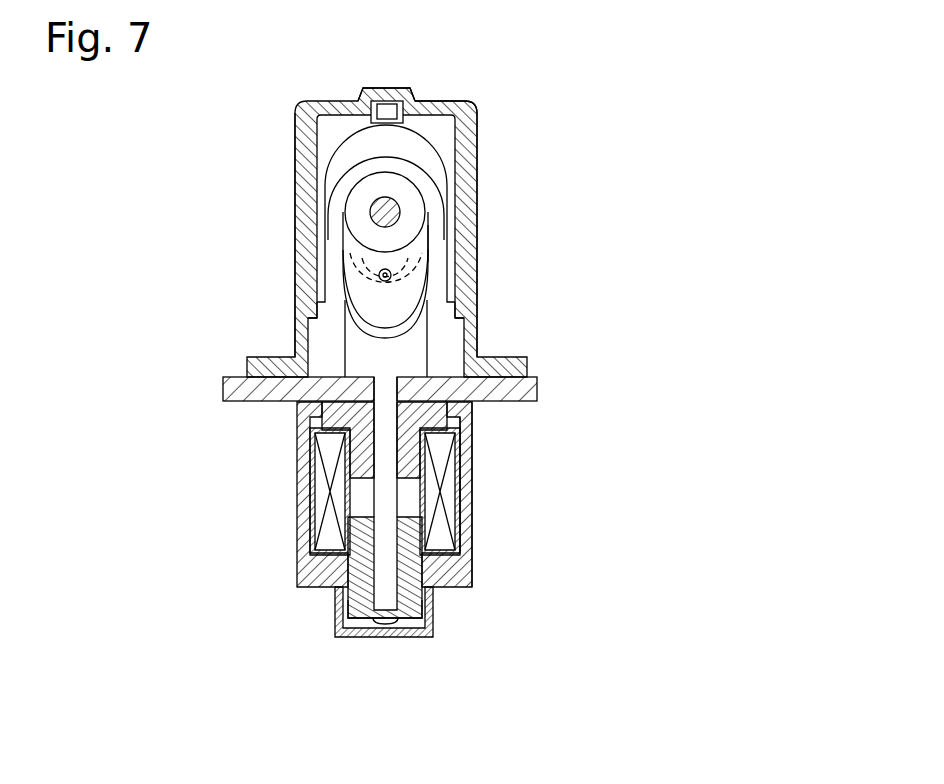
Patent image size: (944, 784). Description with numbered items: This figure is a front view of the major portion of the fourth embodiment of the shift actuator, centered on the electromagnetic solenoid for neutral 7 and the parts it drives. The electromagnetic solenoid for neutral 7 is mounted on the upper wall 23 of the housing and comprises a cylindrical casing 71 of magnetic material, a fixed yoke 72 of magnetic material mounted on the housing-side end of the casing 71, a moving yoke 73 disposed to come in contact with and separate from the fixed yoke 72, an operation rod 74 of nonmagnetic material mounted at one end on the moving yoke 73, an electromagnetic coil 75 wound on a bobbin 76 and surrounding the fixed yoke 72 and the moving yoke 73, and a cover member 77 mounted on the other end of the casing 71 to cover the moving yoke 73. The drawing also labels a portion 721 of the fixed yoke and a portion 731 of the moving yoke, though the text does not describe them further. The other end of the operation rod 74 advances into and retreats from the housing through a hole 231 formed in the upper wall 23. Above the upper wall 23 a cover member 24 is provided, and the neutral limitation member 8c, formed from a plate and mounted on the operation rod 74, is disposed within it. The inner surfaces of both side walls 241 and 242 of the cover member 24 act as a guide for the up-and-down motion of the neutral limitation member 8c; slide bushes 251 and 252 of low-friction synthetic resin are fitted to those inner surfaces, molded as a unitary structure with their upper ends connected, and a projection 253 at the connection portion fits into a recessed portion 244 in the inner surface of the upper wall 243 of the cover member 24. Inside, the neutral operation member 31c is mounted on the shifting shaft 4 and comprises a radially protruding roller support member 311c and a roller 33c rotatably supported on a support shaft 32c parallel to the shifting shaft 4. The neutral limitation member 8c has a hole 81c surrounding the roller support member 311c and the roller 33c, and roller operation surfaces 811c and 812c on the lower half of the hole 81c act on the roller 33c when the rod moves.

The electromagnetic solenoid for neutral 7 is at (535, 599).
The cover member 24 is at (290, 158).
The side wall 241 is at (478, 160).
The side wall 242 is at (303, 185).
The upper wall 243 is at (440, 104).
The recessed portion 244 is at (390, 96).
The projection 253 is at (386, 95).
The slide bush 251 is at (452, 223).
The slide bush 252 is at (320, 223).
The neutral limitation member 8c is at (421, 154).
The shifting shaft 4 is at (393, 208).
The neutral operation member 31c is at (343, 251).
The roller support member 311c is at (428, 245).
The support shaft 32c is at (430, 301).
The roller 33c is at (426, 264).
The hole 81c is at (380, 302).
The roller operation surface 811c is at (404, 312).
The roller operation surface 812c is at (330, 320).
The upper wall 23 is at (245, 387).
The hole 231 is at (478, 359).
The fixed yoke 72 is at (471, 417).
The upper core 721 is at (398, 462).
The casing 71 is at (471, 497).
The bobbin 76 is at (340, 490).
The electromagnetic coil 75 is at (327, 528).
The moving yoke 73 is at (422, 535).
The core bottom 731 is at (395, 572).
The operation rod 74 is at (383, 437).
The cover member 77 is at (352, 640).